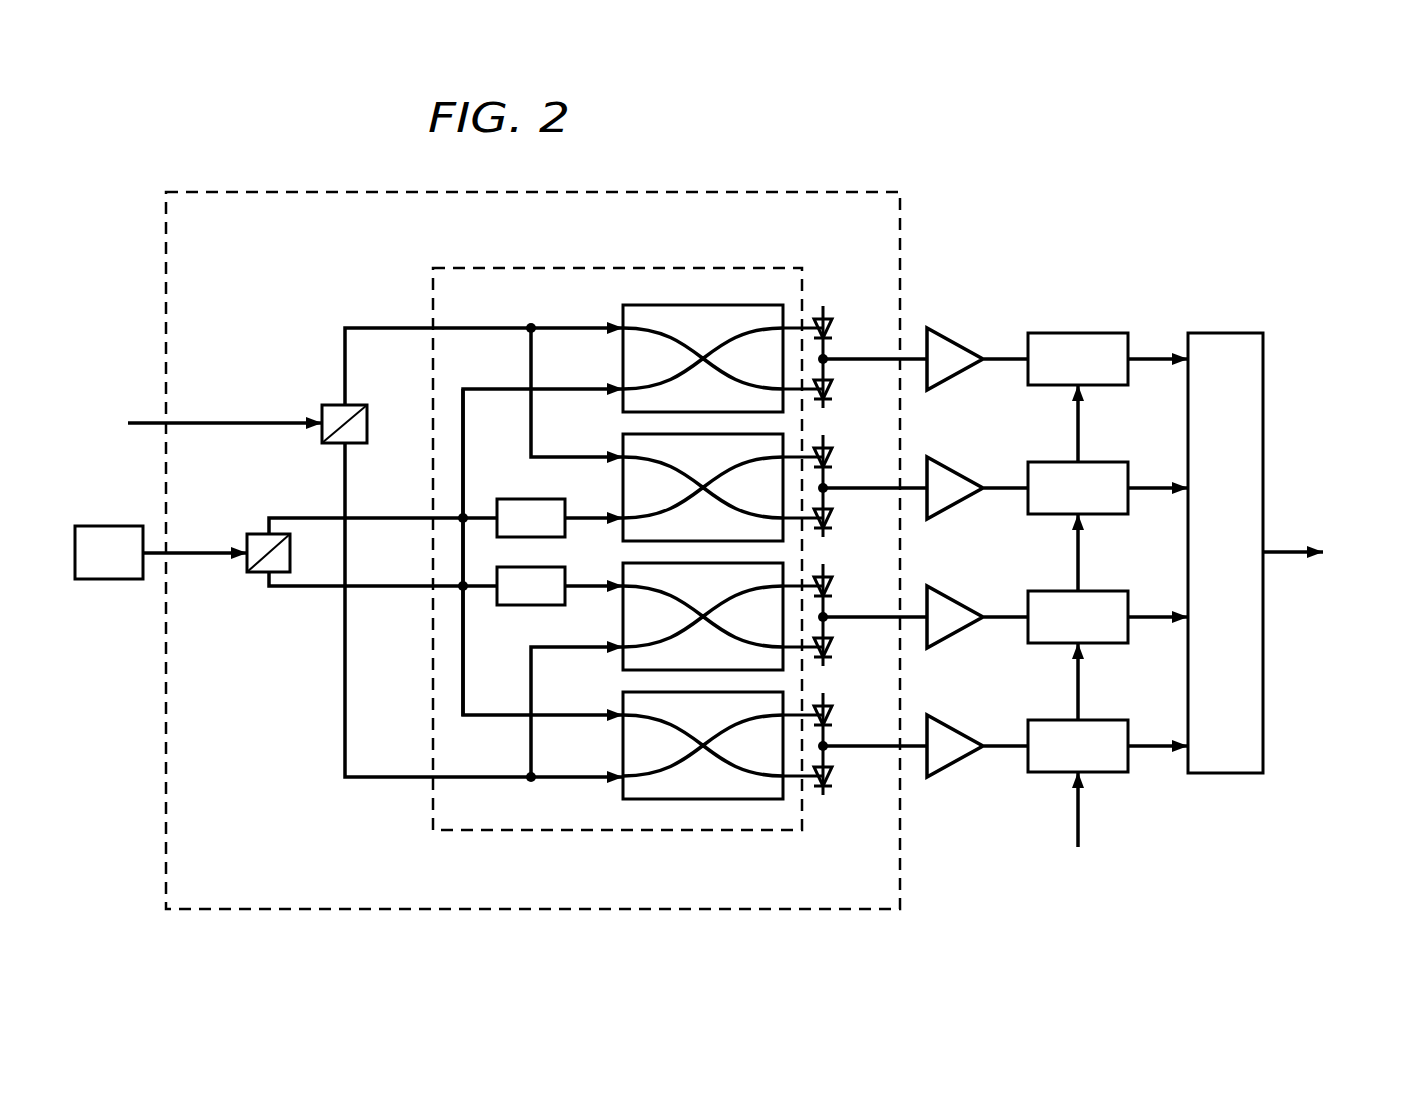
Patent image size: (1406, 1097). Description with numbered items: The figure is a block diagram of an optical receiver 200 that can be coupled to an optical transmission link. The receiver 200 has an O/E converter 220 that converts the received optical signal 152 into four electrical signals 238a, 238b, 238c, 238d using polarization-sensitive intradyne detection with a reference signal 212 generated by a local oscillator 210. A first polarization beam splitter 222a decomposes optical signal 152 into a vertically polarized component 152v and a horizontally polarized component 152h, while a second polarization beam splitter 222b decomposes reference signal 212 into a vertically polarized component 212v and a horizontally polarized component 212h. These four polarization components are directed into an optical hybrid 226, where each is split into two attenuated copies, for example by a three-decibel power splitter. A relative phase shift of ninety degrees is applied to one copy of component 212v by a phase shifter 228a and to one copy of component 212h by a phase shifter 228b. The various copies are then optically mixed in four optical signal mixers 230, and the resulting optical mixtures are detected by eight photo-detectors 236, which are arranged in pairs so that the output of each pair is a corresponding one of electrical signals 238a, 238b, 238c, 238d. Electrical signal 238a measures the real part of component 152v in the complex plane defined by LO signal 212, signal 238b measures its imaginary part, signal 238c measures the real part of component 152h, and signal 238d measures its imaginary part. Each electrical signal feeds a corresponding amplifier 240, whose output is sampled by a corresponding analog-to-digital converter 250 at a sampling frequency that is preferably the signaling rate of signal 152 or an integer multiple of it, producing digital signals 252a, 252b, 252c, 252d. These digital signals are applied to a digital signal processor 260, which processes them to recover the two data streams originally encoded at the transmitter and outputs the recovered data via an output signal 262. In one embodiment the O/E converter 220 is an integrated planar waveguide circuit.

The optical receiver 200 is at (518, 183).
The O/E converter 220 is at (233, 191).
The optical hybrid 226 is at (600, 268).
The optical signal 152 is at (198, 421).
The vertically polarized component 152v is at (347, 362).
The horizontally polarized component 152h is at (347, 483).
The polarization beam splitter 222a is at (321, 440).
The polarization beam splitter 222b is at (256, 574).
The local oscillator 210 is at (118, 526).
The reference signal 212 is at (198, 556).
The vertically polarized component 212v is at (391, 522).
The horizontally polarized component 212h is at (391, 590).
The phase shifter 228a is at (516, 498).
The phase shifter 228b is at (516, 606).
The optical signal mixer 230 is at (720, 339).
The photo-detector 236 is at (824, 288).
The electrical signal 238a is at (846, 355).
The electrical signal 238b is at (846, 484).
The electrical signal 238c is at (846, 613).
The electrical signal 238d is at (846, 742).
The amplifier 240 is at (957, 334).
The analog-to-digital converter 250 is at (1055, 333).
The digital signal 252a is at (1156, 355).
The digital signal 252b is at (1156, 484).
The digital signal 252c is at (1156, 613).
The digital signal 252d is at (1156, 742).
The digital signal processor 260 is at (1225, 333).
The output signal 262 is at (1296, 548).